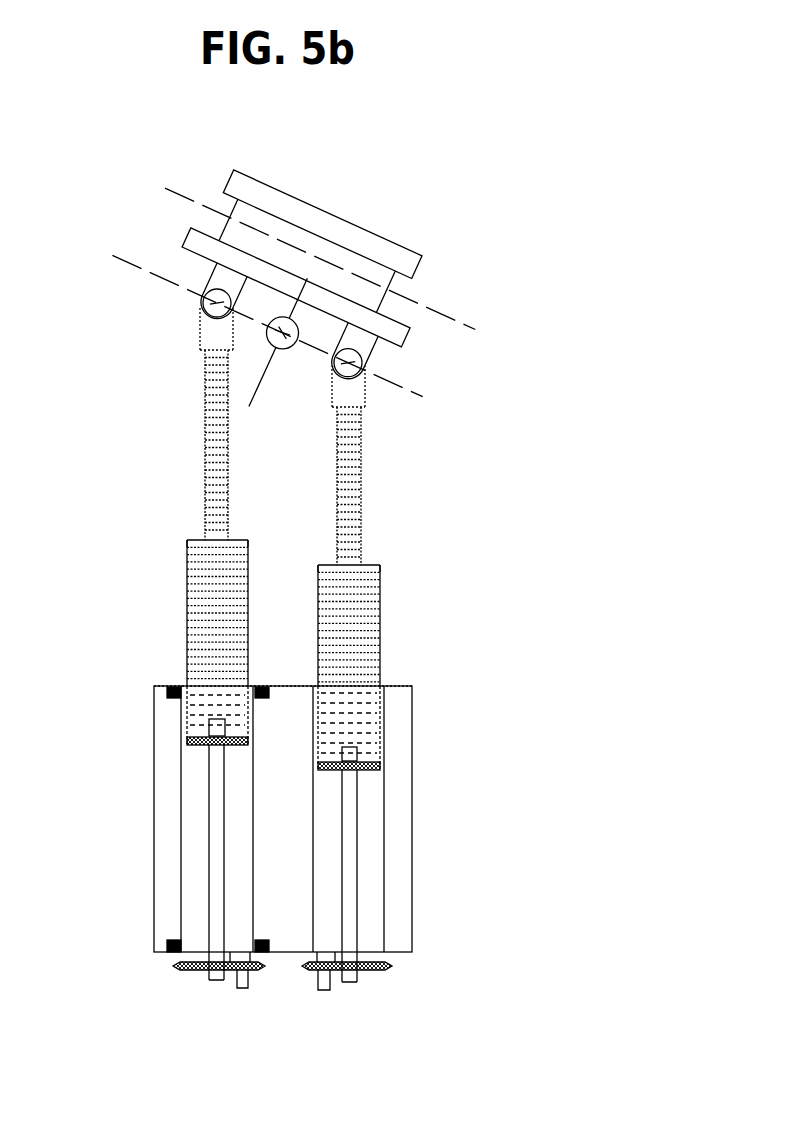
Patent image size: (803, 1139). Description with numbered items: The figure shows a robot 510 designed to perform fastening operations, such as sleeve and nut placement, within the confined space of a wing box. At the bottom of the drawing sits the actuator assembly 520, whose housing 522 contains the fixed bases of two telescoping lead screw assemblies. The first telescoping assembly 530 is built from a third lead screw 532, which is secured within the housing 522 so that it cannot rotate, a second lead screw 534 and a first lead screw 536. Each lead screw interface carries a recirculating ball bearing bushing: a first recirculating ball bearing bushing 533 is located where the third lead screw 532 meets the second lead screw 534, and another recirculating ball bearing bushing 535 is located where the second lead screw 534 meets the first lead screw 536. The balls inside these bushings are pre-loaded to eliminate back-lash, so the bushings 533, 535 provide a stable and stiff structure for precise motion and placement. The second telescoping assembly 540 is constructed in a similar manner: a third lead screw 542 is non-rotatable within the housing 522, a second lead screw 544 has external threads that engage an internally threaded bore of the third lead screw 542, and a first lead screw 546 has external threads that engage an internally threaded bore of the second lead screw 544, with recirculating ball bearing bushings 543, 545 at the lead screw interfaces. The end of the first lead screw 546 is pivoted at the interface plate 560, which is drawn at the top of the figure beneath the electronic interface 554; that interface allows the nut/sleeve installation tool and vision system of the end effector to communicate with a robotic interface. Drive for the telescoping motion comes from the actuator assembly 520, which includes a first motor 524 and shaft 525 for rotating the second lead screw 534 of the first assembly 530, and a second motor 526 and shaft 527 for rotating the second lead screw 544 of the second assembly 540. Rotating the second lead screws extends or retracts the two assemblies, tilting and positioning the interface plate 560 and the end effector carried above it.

The robot 510 is at (372, 281).
The electronic interface 554 is at (327, 216).
The interface plate 560 is at (186, 228).
The first telescoping assembly 530 is at (178, 474).
The first lead screw 536 is at (205, 398).
The recirculating ball bearing bushing 535 is at (196, 537).
The second lead screw 534 is at (187, 585).
The first recirculating ball bearing bushing 533 is at (184, 685).
The second telescoping assembly 540 is at (389, 504).
The first lead screw 546 is at (362, 442).
The recirculating ball bearing bushing 545 is at (376, 565).
The second lead screw 544 is at (380, 617).
The recirculating ball bearing bushing 543 is at (385, 685).
The actuator assembly 520 is at (284, 831).
The housing 522 is at (413, 725).
The third lead screw 532 is at (182, 890).
The third lead screw 542 is at (385, 833).
The shaft 525 is at (208, 810).
The shaft 527 is at (357, 893).
The first motor 524 is at (242, 990).
The second motor 526 is at (330, 992).